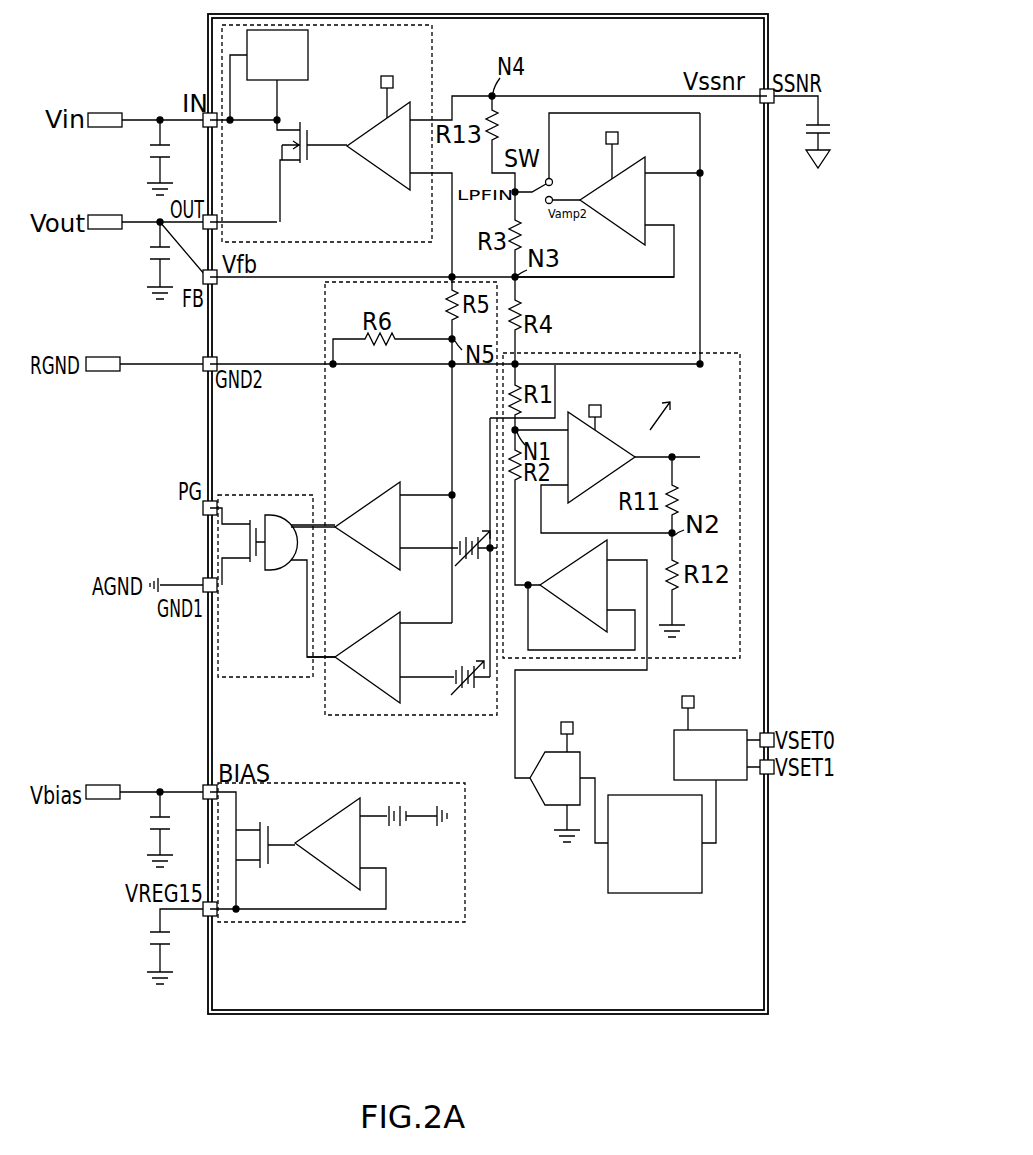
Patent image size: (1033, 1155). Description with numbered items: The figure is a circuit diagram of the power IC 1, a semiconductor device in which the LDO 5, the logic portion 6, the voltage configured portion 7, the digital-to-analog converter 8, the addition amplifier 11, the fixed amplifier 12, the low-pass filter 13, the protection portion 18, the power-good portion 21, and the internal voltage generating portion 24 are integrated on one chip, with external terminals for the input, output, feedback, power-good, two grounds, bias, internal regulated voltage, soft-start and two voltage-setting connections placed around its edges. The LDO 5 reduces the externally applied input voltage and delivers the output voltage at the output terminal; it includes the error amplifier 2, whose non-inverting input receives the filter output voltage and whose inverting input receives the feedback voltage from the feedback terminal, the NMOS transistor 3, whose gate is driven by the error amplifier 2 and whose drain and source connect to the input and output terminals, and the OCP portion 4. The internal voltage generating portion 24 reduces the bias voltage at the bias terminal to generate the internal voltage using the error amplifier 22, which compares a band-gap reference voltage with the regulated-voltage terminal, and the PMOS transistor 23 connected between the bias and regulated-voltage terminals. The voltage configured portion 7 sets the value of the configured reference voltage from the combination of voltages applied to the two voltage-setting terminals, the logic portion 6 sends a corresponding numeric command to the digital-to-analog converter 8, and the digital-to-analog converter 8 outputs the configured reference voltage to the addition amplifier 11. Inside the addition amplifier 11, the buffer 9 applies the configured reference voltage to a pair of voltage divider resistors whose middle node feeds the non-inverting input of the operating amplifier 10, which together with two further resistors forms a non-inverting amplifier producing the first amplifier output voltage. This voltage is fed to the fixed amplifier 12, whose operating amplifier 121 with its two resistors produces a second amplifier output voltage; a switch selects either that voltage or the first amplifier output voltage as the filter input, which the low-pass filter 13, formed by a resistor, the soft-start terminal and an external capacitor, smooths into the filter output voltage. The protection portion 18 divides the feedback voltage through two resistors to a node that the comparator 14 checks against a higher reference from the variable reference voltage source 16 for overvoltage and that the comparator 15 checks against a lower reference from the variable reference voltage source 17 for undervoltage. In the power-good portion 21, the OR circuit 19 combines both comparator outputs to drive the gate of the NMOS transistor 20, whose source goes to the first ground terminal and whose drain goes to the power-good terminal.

The power IC 1 is at (762, 12).
The error amplifier 2 is at (377, 124).
The NMOS transistor 3 is at (290, 173).
The OCP portion 4 is at (308, 42).
The LDO 5 is at (433, 38).
The logic portion 6 is at (622, 795).
The voltage configured portion 7 is at (735, 730).
The DAC 8 is at (578, 750).
The buffer 9 is at (566, 568).
The operating amplifier 10 is at (601, 433).
The addition amplifier 11 is at (712, 352).
The fixed amplifier 12 is at (580, 178).
The operating amplifier 121 is at (612, 224).
The LPF 13 is at (821, 77).
The comparator 14 is at (383, 494).
The comparator 15 is at (386, 615).
The variable reference voltage source 16 is at (462, 532).
The variable reference voltage source 17 is at (458, 660).
The protection portion 18 is at (352, 718).
The OR circuit 19 is at (278, 573).
The NMOS transistor 20 is at (244, 574).
The power-good portion 21 is at (291, 495).
The error amplifier 22 is at (336, 813).
The PMOS transistor 23 is at (278, 866).
The internal voltage generating portion 24 is at (440, 783).